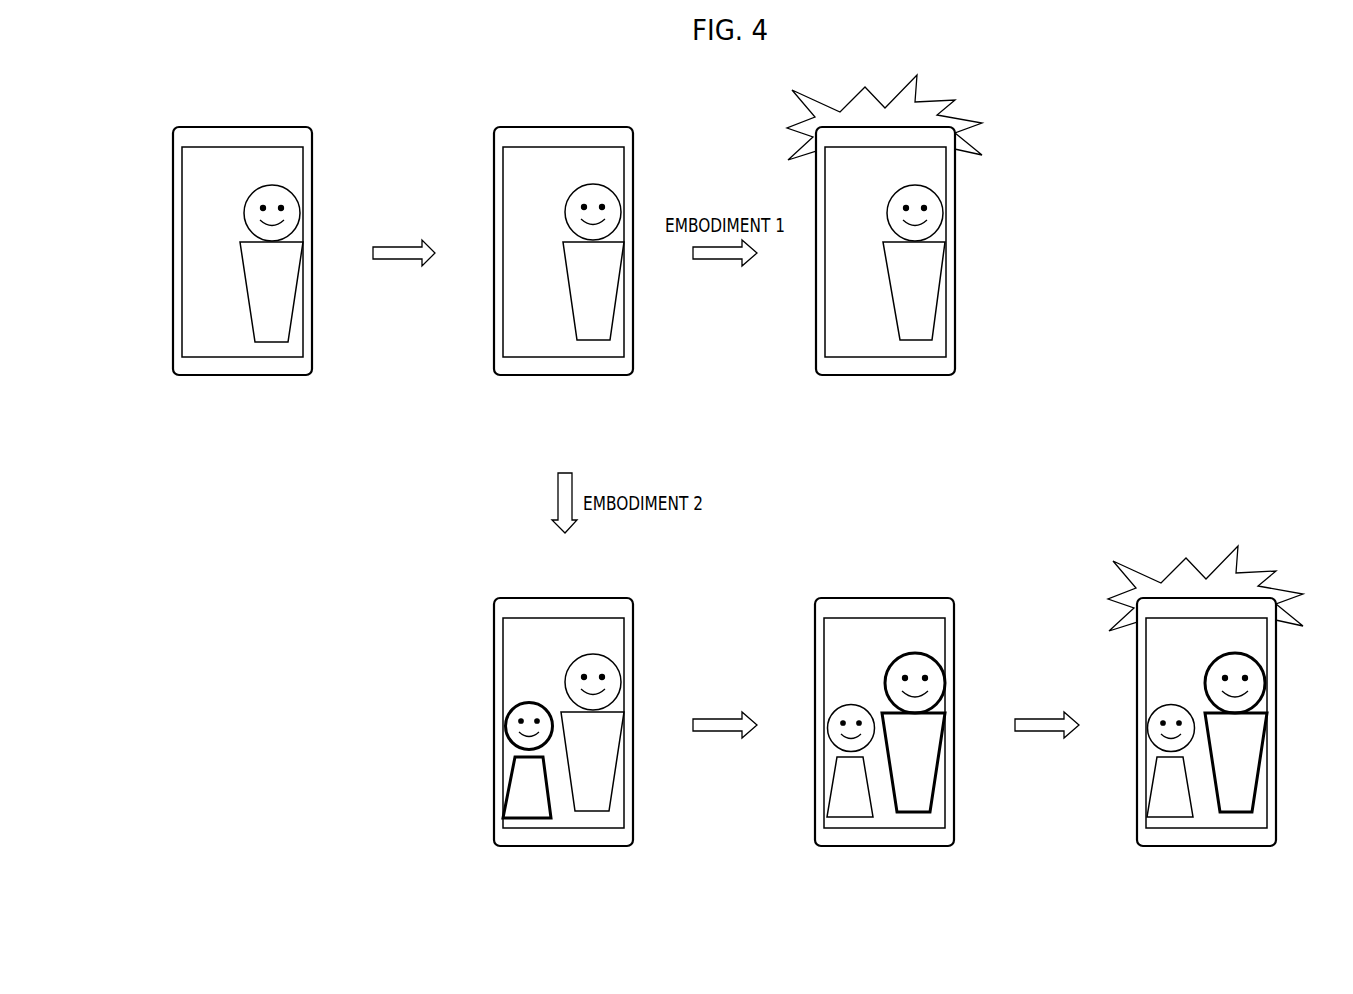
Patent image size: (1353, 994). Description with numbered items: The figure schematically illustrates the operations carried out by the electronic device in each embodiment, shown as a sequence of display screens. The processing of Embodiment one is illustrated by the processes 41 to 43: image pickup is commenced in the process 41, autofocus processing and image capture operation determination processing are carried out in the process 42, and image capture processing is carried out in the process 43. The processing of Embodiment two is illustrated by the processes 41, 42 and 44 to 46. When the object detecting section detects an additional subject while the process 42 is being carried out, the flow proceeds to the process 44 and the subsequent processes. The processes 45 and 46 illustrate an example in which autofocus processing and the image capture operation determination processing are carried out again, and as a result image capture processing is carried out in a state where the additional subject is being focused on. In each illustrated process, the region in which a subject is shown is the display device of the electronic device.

The process 41 is at (326, 102).
The process 42 is at (646, 102).
The process 43 is at (969, 102).
The process 44 is at (644, 575).
The process 45 is at (967, 575).
The process 46 is at (1289, 575).